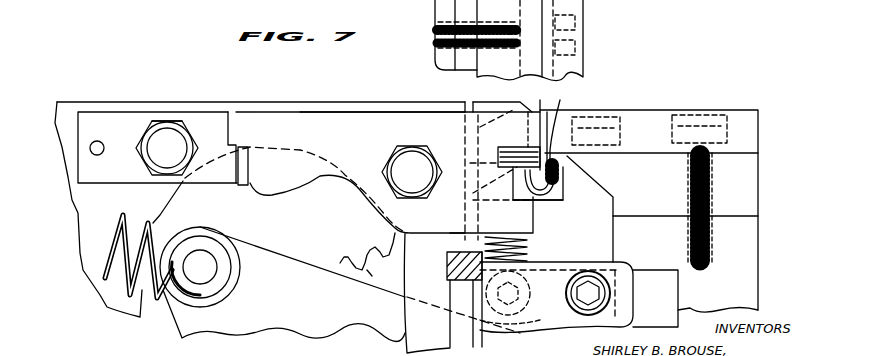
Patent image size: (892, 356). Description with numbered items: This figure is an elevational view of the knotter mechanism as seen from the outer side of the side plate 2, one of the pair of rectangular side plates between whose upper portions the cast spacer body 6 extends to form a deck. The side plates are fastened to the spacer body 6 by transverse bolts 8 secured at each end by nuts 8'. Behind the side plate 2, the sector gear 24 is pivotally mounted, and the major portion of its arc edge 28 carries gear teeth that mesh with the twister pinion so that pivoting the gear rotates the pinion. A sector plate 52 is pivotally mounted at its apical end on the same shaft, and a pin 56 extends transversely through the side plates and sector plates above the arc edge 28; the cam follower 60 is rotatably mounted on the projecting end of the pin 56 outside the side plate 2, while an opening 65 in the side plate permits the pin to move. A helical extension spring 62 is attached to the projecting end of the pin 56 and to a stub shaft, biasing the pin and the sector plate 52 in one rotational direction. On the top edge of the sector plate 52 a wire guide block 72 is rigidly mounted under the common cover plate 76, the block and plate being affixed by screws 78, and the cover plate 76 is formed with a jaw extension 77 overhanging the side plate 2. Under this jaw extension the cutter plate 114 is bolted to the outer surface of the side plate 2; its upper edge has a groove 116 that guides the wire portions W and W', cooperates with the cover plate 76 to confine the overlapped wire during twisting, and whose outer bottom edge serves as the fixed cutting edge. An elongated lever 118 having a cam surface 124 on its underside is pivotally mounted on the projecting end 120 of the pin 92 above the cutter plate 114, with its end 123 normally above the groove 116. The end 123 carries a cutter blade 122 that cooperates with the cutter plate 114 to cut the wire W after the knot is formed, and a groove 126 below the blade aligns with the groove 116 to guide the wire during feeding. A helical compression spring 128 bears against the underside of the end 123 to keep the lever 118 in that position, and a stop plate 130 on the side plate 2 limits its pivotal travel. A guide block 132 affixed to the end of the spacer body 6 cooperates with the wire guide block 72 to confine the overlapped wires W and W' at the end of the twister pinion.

The side plate 2 is at (75, 204).
The spacer body 6 is at (277, 103).
The bolt 8 is at (159, 148).
The nut 8' is at (167, 97).
The sector gear 24 is at (373, 276).
The arc edge 28 is at (367, 243).
The sector plate 52 is at (757, 250).
The pin 56 is at (206, 268).
The cam follower 60 is at (226, 300).
The helical extension spring 62 is at (118, 241).
The opening 65 is at (175, 198).
The wire guide block 72 is at (660, 181).
The cover plate 76 is at (645, 110).
The jaw extension 77 is at (562, 130).
The screw 78 is at (713, 176).
The pin 92 is at (424, 184).
The cutter plate 114 is at (614, 252).
The groove 116 is at (548, 193).
The lever 118 is at (418, 123).
The projecting end 120 is at (399, 163).
The cutter blade 122 is at (530, 157).
The lever end 123 is at (541, 130).
The cam surface 124 is at (288, 194).
The groove 126 is at (524, 201).
The helical compression spring 128 is at (528, 247).
The stop plate 130 is at (241, 187).
The guide block 132 is at (481, 101).
The tie wire W is at (503, 190).
The tie wire portion W' is at (589, 197).